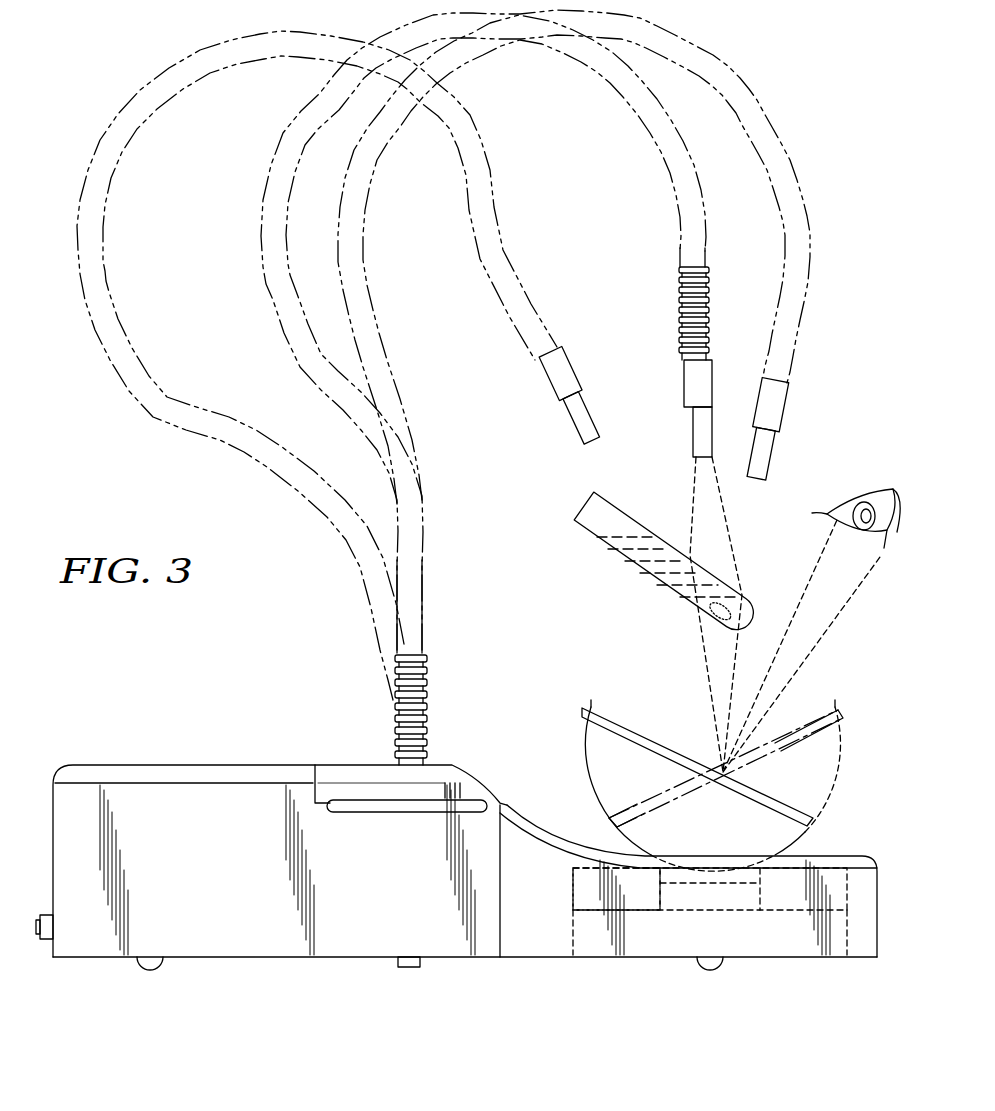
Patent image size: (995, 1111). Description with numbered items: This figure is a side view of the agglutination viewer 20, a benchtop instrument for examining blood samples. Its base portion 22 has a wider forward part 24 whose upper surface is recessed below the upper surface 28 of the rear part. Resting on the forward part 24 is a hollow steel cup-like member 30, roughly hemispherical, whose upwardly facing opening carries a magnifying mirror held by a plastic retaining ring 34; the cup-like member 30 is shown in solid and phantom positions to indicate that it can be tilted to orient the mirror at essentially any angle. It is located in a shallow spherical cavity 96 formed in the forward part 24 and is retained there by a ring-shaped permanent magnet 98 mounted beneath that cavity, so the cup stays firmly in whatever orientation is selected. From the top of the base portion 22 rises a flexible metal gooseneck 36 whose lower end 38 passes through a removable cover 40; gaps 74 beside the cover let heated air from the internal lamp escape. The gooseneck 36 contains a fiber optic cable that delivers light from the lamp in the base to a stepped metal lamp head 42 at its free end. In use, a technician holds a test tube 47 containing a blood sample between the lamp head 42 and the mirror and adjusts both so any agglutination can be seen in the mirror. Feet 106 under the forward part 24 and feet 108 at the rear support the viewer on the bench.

The agglutination viewer 20 is at (105, 103).
The base portion 22 is at (456, 847).
The forward part 24 is at (858, 943).
The upper surface 28 is at (167, 764).
The cup-like member 30 is at (585, 757).
The plastic retaining ring 34 is at (652, 733).
The flexible metal gooseneck 36 is at (265, 174).
The lower end 38 is at (427, 727).
The removable cover 40 is at (343, 769).
The lamp head 42 is at (692, 425).
The test tube 47 is at (630, 560).
The gaps 74 is at (400, 812).
The spherical cavity 96 is at (703, 870).
The ring-shaped permanent magnet 98 is at (633, 905).
The feet 106 is at (718, 964).
The feet 108 is at (157, 967).